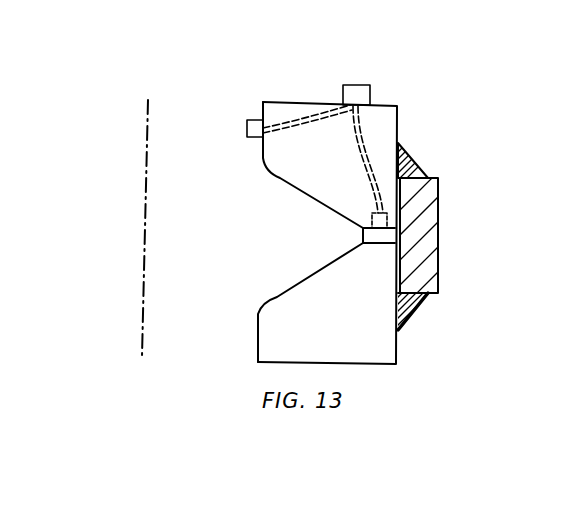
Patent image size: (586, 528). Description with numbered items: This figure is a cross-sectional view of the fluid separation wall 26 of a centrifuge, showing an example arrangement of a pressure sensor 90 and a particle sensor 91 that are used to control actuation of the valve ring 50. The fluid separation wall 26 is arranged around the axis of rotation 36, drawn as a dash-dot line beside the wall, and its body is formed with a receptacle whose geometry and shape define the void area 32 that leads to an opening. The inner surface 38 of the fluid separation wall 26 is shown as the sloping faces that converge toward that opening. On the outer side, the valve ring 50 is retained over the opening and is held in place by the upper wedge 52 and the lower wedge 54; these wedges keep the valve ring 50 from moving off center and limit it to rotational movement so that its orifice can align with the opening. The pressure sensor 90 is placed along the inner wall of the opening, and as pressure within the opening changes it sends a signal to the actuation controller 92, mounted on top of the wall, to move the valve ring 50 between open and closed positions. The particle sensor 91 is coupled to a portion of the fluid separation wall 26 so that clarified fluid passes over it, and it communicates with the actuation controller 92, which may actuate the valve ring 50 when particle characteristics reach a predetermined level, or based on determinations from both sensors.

The fluid separation wall 26 is at (438, 82).
The void area 32 is at (324, 246).
The axis of rotation 36 is at (146, 163).
The inner surface 38 is at (278, 178).
The valve ring 50 is at (438, 242).
The upper wedge 52 is at (414, 159).
The lower wedge 54 is at (412, 308).
The pressure sensor 90 is at (375, 208).
The particle sensor 91 is at (247, 128).
The actuation controller 92 is at (356, 85).